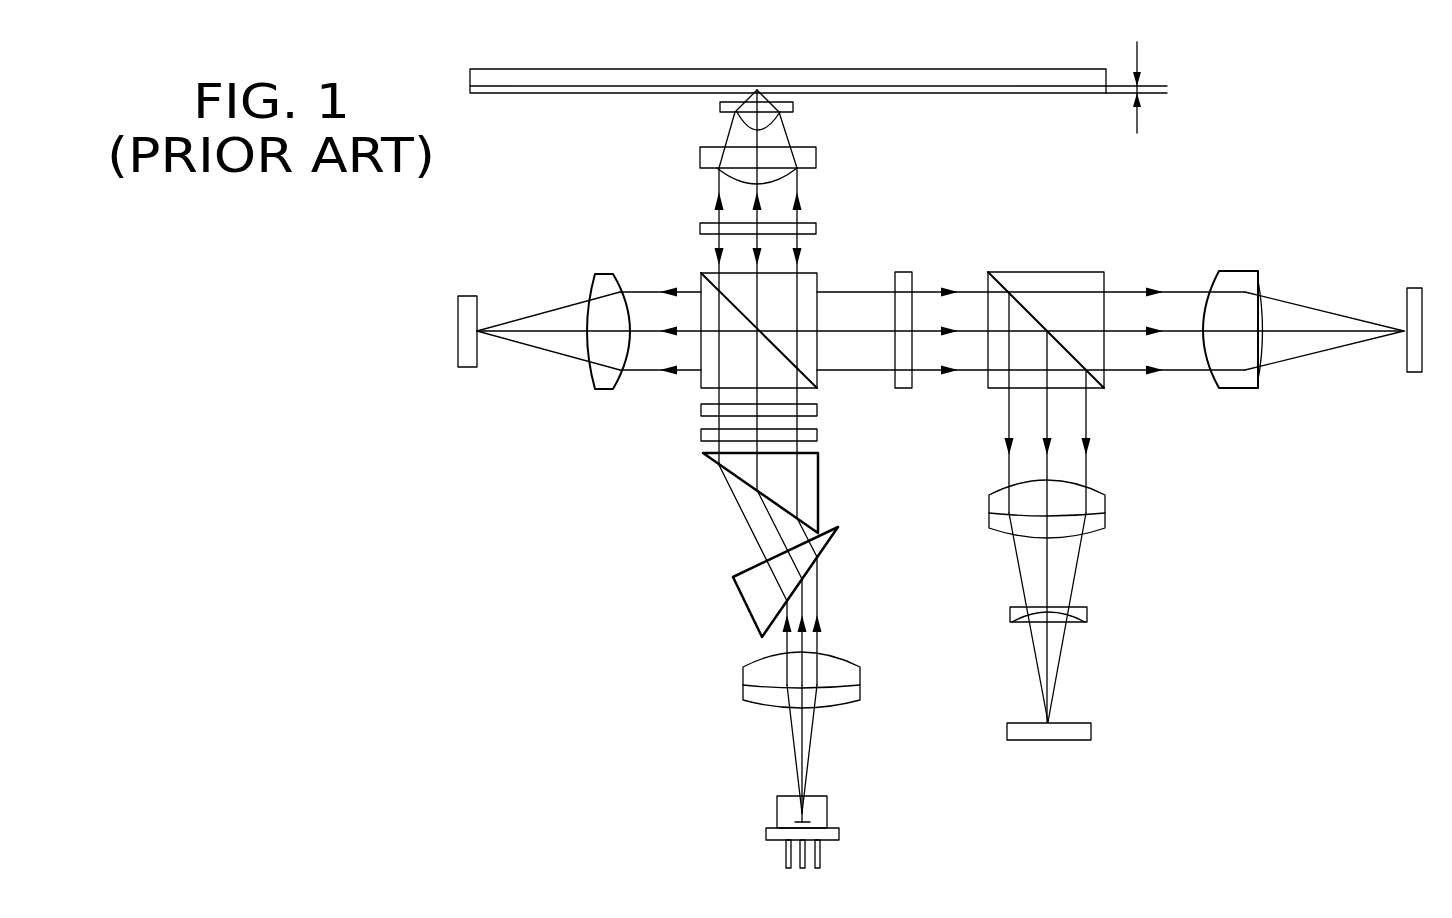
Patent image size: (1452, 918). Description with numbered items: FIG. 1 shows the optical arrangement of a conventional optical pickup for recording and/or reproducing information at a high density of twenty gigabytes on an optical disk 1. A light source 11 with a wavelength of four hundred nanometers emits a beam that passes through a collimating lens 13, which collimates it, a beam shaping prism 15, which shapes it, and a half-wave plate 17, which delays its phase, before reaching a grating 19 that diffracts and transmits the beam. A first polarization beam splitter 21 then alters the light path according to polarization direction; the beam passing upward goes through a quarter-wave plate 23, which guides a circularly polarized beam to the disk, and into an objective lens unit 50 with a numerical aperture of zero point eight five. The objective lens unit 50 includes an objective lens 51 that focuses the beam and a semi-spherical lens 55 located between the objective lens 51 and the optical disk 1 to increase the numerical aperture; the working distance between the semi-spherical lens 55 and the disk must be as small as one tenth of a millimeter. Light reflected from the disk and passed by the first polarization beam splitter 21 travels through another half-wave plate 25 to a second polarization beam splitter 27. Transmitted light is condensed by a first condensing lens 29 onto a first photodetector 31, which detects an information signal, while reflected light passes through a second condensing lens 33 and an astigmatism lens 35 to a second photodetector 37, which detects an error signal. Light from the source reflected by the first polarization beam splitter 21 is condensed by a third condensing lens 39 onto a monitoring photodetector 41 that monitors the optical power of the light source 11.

The optical disk 1 is at (1062, 60).
The light source 11 is at (827, 813).
The collimating lens 13 is at (860, 672).
The beam shaping prism 15 is at (852, 483).
The λ/2 plate 17 is at (817, 435).
The grating 19 is at (817, 410).
The first polarization beam splitter 21 is at (817, 282).
The λ/4 plate 23 is at (816, 229).
The λ/2 plate 25 is at (912, 283).
The second polarization beam splitter 27 is at (1048, 272).
The first condensing lens 29 is at (1240, 271).
The first photodetector 31 is at (1416, 288).
The second condensing lens 33 is at (1105, 513).
The astigmatism lens 35 is at (1087, 615).
The second photodetector 37 is at (1091, 732).
The third condensing lens 39 is at (600, 389).
The monitoring photodetector 41 is at (463, 367).
The objective lens unit 50 is at (825, 143).
The objective lens 51 is at (816, 153).
The semi-spherical lens 55 is at (793, 107).